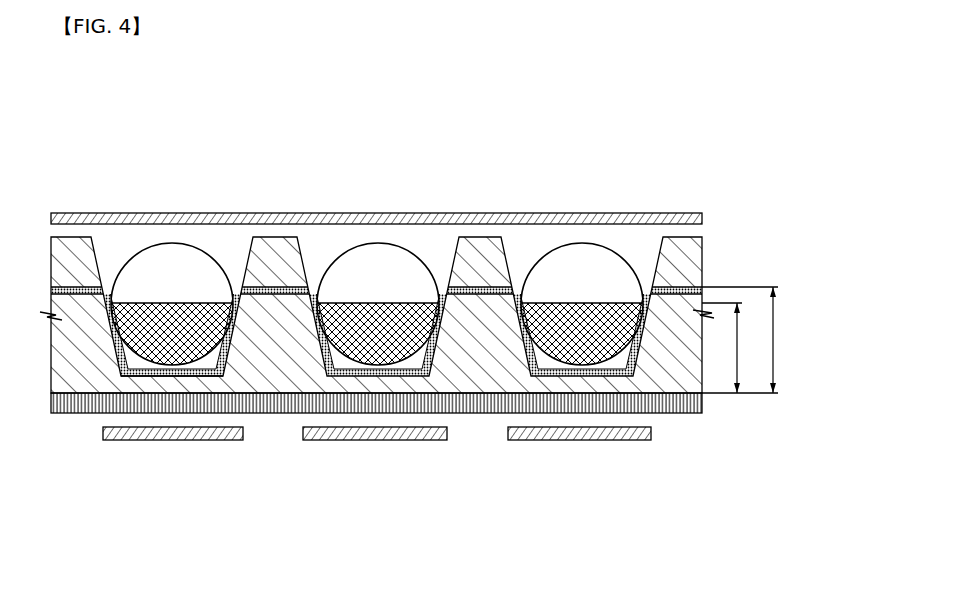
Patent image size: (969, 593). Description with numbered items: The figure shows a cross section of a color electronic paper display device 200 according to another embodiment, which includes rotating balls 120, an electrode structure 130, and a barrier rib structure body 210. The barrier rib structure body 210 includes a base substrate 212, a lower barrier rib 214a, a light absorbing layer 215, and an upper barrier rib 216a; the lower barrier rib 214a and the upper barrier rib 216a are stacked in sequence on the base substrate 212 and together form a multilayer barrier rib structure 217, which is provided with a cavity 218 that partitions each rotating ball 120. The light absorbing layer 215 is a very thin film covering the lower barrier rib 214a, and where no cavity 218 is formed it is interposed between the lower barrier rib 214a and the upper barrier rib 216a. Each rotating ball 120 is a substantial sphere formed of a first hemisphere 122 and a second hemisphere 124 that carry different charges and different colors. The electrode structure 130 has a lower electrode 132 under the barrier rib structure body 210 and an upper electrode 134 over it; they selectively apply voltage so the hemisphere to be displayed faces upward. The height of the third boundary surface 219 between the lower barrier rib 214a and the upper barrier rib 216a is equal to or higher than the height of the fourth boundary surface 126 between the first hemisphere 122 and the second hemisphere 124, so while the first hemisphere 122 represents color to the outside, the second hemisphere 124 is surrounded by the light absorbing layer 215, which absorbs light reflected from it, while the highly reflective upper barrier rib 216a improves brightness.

The color electronic paper display device 200 is at (96, 84).
The barrier rib structure body 210 is at (332, 539).
The base substrate 212 is at (303, 402).
The lower barrier rib 214a is at (185, 378).
The light absorbing layer 215 is at (193, 378).
The upper barrier rib 216a is at (92, 272).
The multilayer barrier rib structure 217 is at (52, 497).
The cavity 218 is at (108, 297).
The third boundary surface 219 is at (72, 280).
The rotating balls 120 is at (655, 146).
The first hemisphere 122 is at (577, 285).
The second hemisphere 124 is at (603, 302).
The fourth boundary surface 126 is at (548, 300).
The electrode structure 130 is at (562, 497).
The lower electrode 132 is at (537, 433).
The upper electrode 134 is at (481, 218).